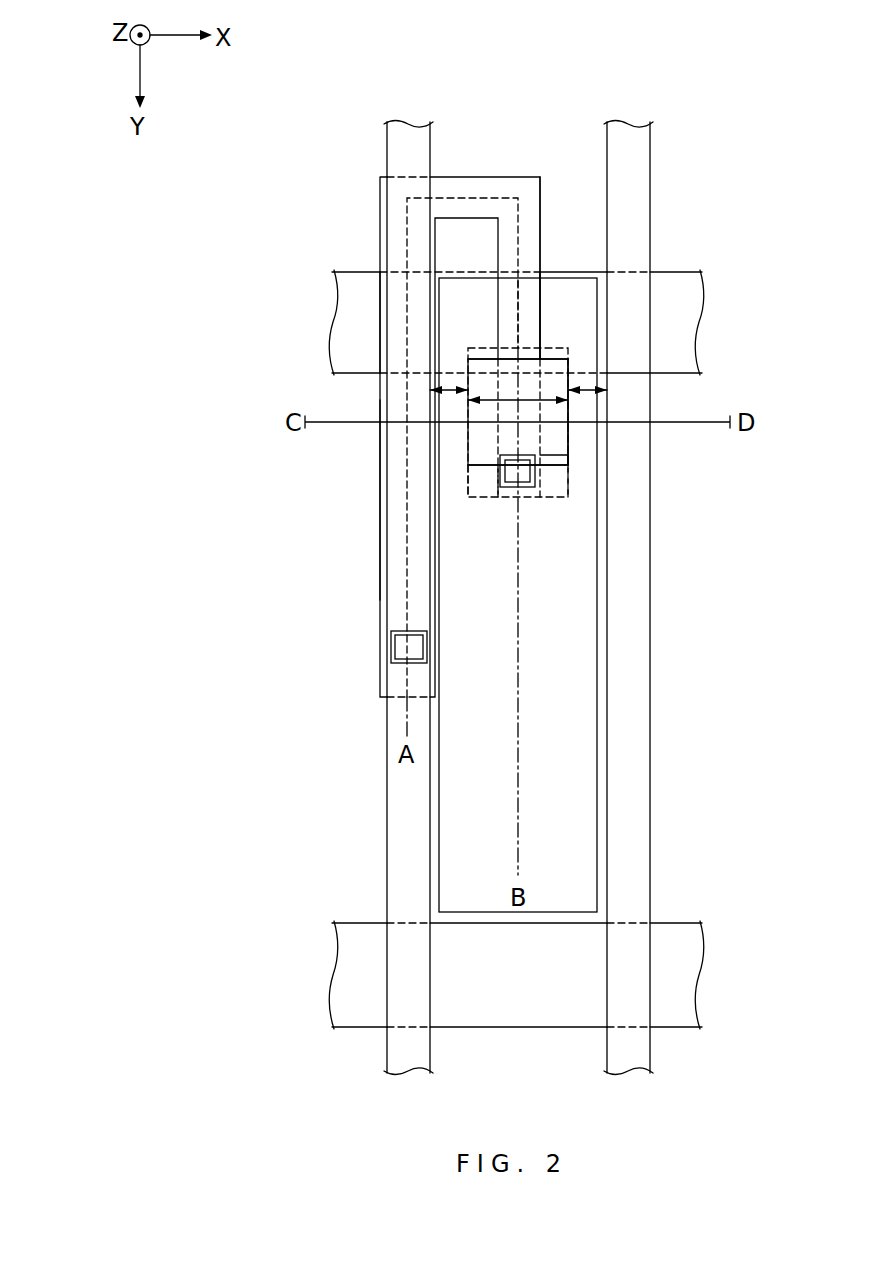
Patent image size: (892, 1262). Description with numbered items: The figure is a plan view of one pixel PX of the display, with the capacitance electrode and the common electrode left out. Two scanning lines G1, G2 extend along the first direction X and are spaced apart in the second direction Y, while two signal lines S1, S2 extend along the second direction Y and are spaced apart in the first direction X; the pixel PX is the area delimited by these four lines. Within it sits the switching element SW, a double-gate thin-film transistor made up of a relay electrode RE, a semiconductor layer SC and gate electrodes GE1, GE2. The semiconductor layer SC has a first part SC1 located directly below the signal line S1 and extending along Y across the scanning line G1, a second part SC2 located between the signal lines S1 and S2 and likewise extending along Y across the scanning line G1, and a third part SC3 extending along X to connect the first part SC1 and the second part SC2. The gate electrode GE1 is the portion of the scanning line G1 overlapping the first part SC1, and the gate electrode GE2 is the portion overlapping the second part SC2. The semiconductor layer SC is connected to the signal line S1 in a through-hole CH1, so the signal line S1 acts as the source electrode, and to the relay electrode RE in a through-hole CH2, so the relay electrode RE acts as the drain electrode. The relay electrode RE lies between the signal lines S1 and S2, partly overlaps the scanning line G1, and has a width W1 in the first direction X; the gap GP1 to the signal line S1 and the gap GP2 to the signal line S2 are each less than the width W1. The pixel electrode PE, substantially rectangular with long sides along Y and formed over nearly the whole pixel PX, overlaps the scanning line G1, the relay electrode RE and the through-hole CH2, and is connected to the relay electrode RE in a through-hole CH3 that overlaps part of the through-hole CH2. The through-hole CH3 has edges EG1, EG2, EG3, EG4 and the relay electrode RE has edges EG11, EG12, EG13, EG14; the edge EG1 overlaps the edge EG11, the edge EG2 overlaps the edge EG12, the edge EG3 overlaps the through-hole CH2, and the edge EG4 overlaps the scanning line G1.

The switching element SW is at (302, 130).
The pixel PX is at (502, 88).
The signal line S1 is at (413, 124).
The signal line S2 is at (631, 124).
The semiconductor layer SC is at (372, 226).
The first part SC1 is at (382, 503).
The second part SC2 is at (530, 224).
The third part SC3 is at (455, 187).
The gate electrode GE1 is at (403, 325).
The gate electrode GE2 is at (568, 289).
The edge EG1 is at (468, 435).
The edge EG2 is at (568, 437).
The edge EG3 is at (550, 467).
The edge EG4 is at (487, 359).
The edge EG11 is at (467, 498).
The edge EG12 is at (569, 497).
The edge EG13 is at (505, 498).
The edge EG14 is at (522, 307).
The scanning line G1 is at (702, 325).
The scanning line G2 is at (702, 980).
The gap GP1 is at (447, 395).
The gap GP2 is at (586, 395).
The width W1 is at (528, 398).
The through-hole CH1 is at (391, 651).
The through-hole CH2 is at (537, 474).
The through-hole CH3 is at (568, 455).
The relay electrode RE is at (478, 498).
The pixel electrode PE is at (597, 688).